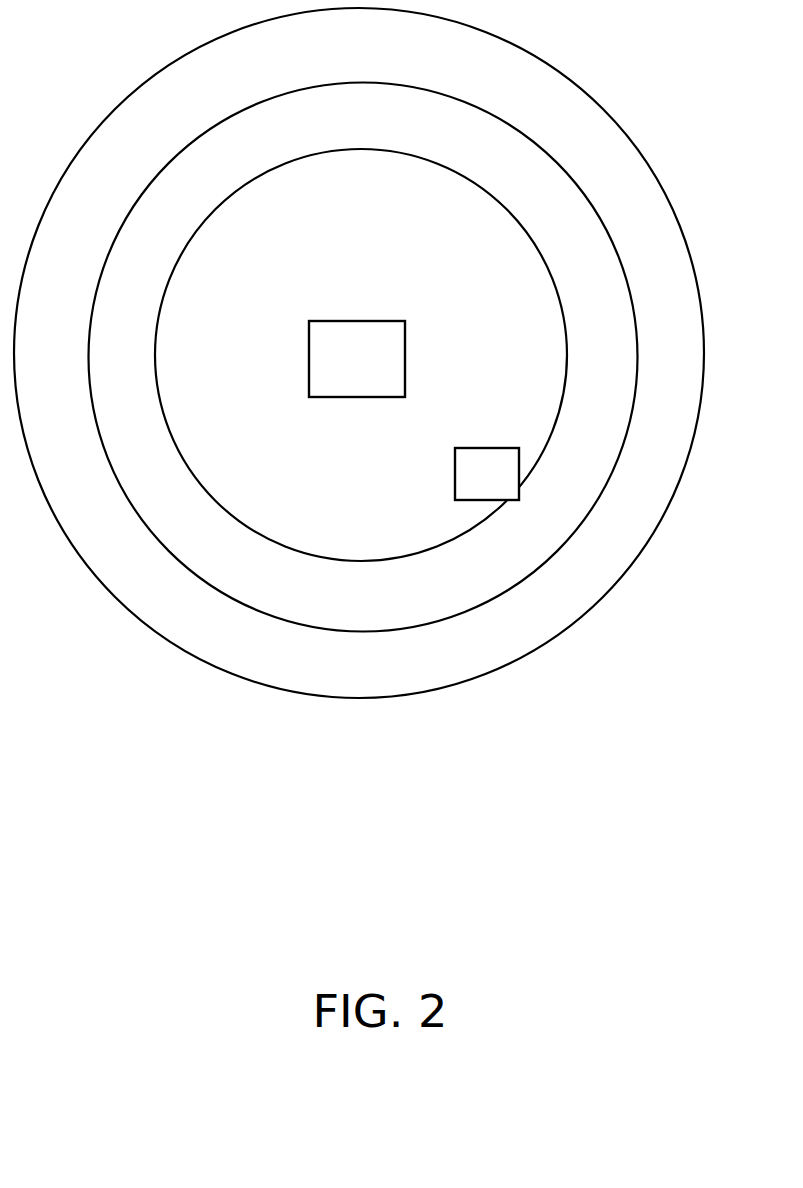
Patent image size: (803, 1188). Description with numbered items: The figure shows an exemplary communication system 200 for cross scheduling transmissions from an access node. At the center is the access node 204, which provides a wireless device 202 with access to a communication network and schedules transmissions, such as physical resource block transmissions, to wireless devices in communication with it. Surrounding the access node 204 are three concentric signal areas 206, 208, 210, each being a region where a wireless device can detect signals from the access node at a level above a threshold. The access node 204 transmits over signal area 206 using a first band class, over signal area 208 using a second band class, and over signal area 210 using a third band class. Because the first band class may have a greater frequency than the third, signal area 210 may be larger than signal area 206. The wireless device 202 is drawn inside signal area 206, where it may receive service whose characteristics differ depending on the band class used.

The communication system 200 is at (332, 777).
The wireless device 202 is at (487, 474).
The access node 204 is at (357, 359).
The signal area 206 is at (567, 347).
The signal area 208 is at (634, 317).
The signal area 210 is at (703, 317).